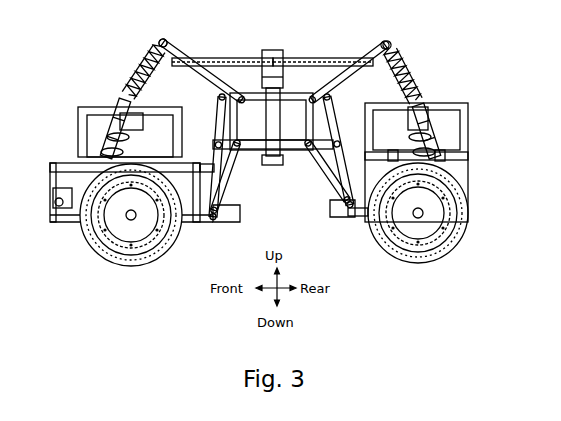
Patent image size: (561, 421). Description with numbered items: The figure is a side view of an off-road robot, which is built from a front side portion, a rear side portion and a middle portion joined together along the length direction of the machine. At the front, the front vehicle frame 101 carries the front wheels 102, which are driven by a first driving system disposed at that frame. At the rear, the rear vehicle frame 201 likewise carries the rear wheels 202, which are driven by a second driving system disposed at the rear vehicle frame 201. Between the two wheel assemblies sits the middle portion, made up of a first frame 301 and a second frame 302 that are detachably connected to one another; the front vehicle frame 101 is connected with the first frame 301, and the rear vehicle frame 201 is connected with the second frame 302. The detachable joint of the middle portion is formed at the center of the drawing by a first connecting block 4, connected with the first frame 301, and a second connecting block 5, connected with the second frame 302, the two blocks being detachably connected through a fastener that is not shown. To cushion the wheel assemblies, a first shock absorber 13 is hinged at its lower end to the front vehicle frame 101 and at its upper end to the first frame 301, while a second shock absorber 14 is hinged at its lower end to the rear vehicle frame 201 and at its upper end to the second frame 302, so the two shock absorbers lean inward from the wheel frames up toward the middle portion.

The front vehicle frame 101 is at (88, 107).
The front wheels 102 is at (118, 217).
The rear vehicle frame 201 is at (448, 110).
The rear wheels 202 is at (423, 225).
The first frame 301 is at (223, 60).
The second frame 302 is at (317, 60).
The first connecting block 4 is at (270, 62).
The second connecting block 5 is at (278, 63).
The first shock absorber 13 is at (137, 70).
The second shock absorber 14 is at (415, 67).